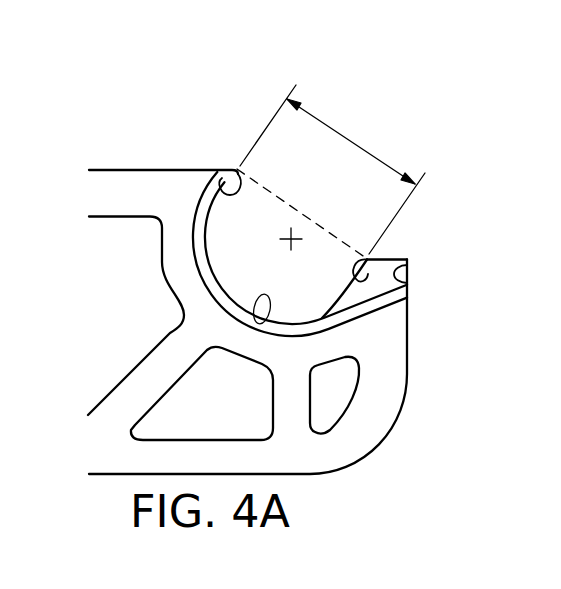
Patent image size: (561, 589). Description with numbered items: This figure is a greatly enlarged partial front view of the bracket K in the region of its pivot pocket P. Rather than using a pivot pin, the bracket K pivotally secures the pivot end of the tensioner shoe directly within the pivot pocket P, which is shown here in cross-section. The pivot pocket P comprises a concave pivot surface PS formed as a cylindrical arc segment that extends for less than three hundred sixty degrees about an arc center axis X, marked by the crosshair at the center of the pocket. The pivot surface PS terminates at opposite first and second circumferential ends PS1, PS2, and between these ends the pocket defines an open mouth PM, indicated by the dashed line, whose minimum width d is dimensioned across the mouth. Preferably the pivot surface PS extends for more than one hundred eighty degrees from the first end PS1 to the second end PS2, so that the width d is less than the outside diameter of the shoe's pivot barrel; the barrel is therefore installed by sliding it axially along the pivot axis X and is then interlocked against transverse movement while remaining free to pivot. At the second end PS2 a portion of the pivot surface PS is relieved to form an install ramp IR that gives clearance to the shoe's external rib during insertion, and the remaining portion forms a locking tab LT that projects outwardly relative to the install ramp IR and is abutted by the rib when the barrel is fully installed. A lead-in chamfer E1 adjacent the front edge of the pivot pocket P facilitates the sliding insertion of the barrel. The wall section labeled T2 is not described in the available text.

The bracket K is at (128, 120).
The first circumferential end of the pivot surface PS1 is at (217, 176).
The open mouth PM is at (317, 227).
The width of the open mouth d is at (332, 169).
The locking tab LT is at (392, 262).
The install ramp IR is at (408, 260).
The pivot pocket P is at (224, 234).
The arc center axis X is at (290, 242).
The lead-in chamfer E1 is at (233, 303).
The pivot surface PS is at (262, 308).
The second circumferential end of the pivot surface PS2 is at (353, 245).
The second rib / wall T2 is at (370, 413).